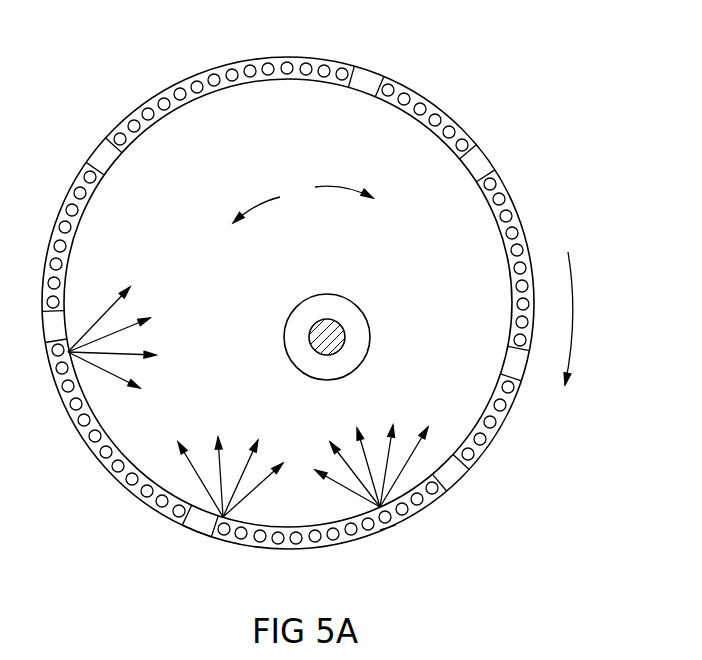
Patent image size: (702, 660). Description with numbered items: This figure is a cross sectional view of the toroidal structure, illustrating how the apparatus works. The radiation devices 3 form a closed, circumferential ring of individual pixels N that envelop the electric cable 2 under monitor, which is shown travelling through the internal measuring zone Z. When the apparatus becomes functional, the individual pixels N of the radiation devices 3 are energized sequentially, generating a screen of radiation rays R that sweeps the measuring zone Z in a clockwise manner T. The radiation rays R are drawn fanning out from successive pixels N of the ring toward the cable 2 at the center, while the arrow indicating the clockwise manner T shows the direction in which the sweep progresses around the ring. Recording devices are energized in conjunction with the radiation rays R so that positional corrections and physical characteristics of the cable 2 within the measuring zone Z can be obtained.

The electric cable 2 is at (351, 298).
The radiation devices 3 is at (288, 287).
The radiation rays R is at (253, 395).
The individual pixels N is at (311, 563).
The clockwise manner T is at (568, 296).
The measuring zone Z is at (303, 198).